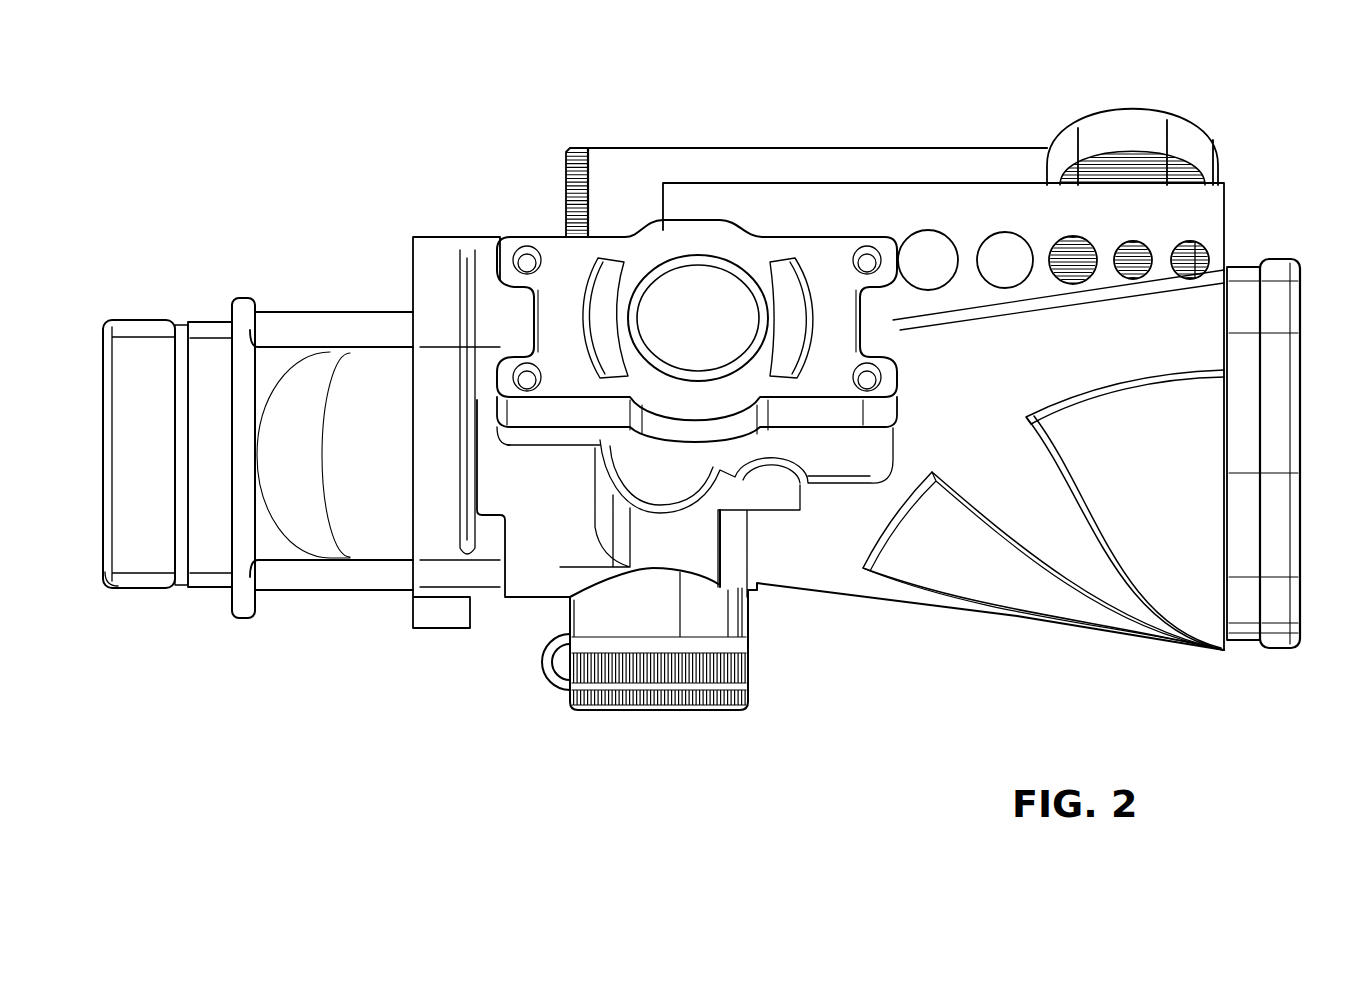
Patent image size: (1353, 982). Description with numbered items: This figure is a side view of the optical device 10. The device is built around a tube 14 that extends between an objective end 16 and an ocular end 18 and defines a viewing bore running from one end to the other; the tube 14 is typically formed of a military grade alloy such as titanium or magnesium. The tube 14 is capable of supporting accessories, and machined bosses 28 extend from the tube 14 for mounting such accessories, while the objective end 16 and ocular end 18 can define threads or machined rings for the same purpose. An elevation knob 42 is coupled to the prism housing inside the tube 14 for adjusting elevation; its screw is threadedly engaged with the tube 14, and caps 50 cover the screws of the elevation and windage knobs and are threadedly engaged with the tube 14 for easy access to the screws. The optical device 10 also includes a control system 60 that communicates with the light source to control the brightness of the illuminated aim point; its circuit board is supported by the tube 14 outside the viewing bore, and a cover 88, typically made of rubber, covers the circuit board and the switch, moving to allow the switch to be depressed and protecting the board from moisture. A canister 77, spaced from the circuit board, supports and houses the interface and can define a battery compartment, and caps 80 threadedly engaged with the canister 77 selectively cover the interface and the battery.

The optical device 10 is at (690, 106).
The tube 14 is at (830, 573).
The objective end 16 is at (1277, 241).
The ocular end 18 is at (110, 308).
The machined bosses 28 is at (643, 489).
The elevation knob 42 is at (625, 716).
The caps 50 is at (705, 712).
The control system 60 is at (697, 319).
The canister 77 is at (897, 158).
The caps 80 is at (578, 148).
The cover 88 is at (733, 283).